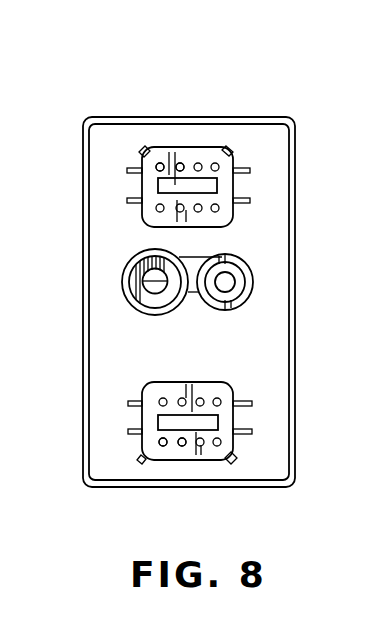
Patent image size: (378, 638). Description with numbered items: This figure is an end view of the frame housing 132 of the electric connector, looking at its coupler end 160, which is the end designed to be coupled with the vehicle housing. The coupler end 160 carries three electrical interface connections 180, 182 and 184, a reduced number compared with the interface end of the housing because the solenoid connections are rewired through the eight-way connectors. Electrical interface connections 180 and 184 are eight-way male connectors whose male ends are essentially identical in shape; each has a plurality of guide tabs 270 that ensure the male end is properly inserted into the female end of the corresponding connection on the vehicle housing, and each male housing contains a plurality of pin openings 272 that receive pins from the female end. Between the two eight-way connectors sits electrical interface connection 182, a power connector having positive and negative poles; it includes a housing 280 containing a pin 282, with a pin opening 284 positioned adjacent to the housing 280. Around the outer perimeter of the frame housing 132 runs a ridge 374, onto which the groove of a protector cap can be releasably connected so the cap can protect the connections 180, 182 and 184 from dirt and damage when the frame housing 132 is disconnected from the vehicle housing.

The frame housing 132 is at (86, 220).
The coupler end 160 is at (265, 130).
The electrical interface connection 180 is at (199, 142).
The electrical interface connection 182 is at (252, 260).
The electrical interface connection 184 is at (236, 380).
The guide tabs 270 is at (140, 150).
The pin openings 272 is at (180, 163).
The housing 280 is at (122, 286).
The pin 282 is at (155, 281).
The pin opening 284 is at (226, 283).
The ridge 374 is at (109, 116).